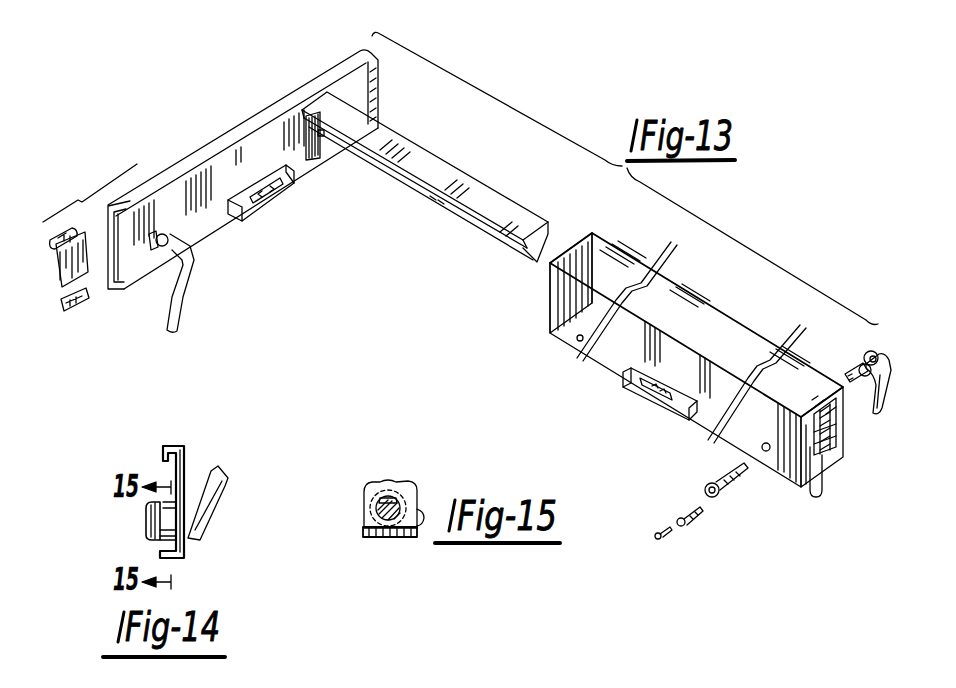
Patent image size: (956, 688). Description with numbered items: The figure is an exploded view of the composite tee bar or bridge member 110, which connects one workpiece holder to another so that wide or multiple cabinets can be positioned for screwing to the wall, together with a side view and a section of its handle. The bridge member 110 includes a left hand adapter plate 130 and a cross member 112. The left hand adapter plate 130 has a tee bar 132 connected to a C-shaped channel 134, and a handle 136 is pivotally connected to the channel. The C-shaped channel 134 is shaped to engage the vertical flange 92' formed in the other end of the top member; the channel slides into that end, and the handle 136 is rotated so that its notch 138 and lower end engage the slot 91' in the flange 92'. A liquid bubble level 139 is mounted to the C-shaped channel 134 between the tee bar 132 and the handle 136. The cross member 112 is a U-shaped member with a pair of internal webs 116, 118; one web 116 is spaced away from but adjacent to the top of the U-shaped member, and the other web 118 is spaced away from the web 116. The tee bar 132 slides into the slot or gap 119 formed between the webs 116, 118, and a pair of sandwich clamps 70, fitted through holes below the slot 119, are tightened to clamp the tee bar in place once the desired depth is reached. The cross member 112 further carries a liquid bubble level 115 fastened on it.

In FIG. 13, the sandwich clamp 70 is at (882, 351).
In FIG. 13, the slot 91' is at (94, 321).
In FIG. 13, the flange 92' is at (85, 206).
In FIG. 13, the bridge member 110 is at (703, 303).
In FIG. 13, the cross member 112 is at (548, 334).
In FIG. 13, the liquid bubble level 115 is at (688, 420).
In FIG. 13, the internal web 116 is at (822, 470).
In FIG. 13, the internal web 118 is at (790, 476).
In FIG. 13, the slot 119 is at (824, 462).
In FIG. 13, the left hand adapter plate 130 is at (207, 232).
In FIG. 13, the tee bar 132 is at (445, 163).
In FIG. 13, the C-shaped channel 134 is at (313, 156).
In FIG. 14, the C-shaped channel 134 is at (187, 463).
In FIG. 15, the C-shaped channel 134 is at (386, 540).
In FIG. 13, the handle 136 is at (178, 332).
In FIG. 14, the handle 136 is at (200, 520).
In FIG. 15, the handle 136 is at (422, 518).
In FIG. 14, the notch 138 is at (150, 503).
In FIG. 15, the notch 138 is at (392, 498).
In FIG. 13, the liquid bubble level 139 is at (260, 210).